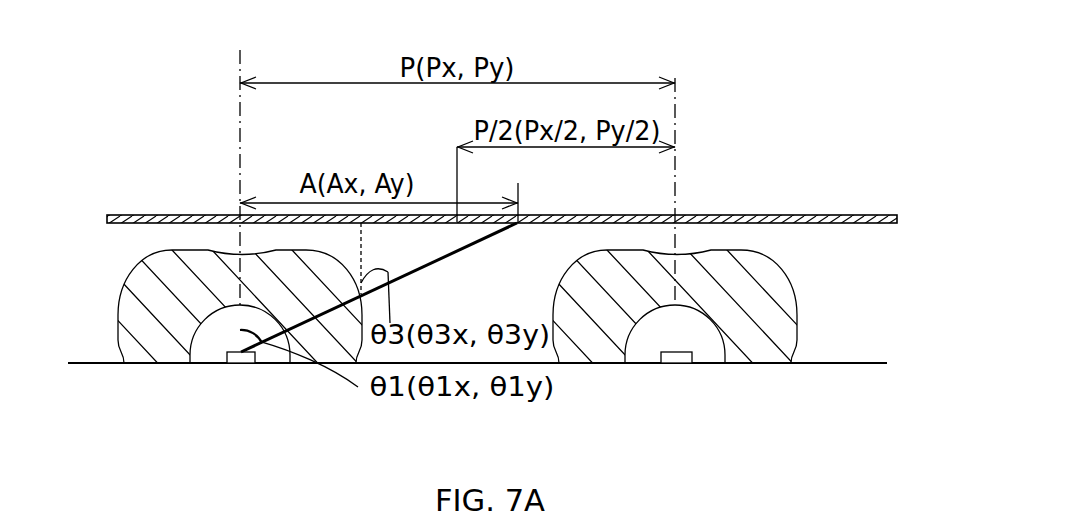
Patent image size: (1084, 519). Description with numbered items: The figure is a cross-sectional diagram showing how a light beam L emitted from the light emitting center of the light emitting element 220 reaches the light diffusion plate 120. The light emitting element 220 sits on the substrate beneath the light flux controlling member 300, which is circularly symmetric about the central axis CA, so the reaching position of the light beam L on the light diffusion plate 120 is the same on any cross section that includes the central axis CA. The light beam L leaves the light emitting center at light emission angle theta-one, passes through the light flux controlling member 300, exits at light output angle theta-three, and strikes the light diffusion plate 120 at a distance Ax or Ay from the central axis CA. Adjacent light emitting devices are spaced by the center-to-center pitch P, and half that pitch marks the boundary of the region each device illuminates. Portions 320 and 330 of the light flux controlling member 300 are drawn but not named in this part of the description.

The light diffusion plate 120 is at (897, 223).
The light flux controlling member 300 is at (464, 289).
The lens convex surface 330 is at (156, 258).
The lens recess 320 is at (192, 363).
The light emitting element 220 is at (245, 364).
The light beam L is at (258, 343).
The central axis CA is at (240, 192).